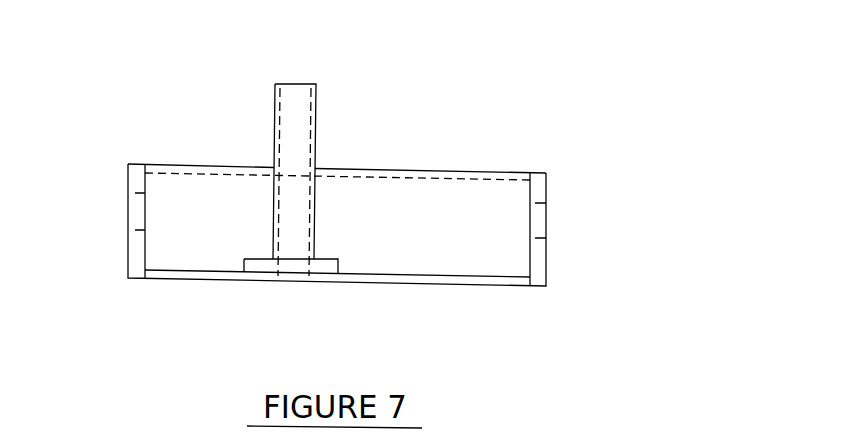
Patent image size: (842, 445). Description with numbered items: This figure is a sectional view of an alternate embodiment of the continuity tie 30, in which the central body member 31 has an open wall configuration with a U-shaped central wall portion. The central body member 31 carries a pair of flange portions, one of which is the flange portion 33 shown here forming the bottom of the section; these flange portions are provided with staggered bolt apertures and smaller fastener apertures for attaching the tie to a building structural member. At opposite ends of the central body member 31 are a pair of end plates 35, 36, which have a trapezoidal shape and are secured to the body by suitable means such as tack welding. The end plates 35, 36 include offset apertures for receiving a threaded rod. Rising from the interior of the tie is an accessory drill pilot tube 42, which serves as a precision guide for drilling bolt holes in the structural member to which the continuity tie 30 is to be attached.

The continuity tie 30 is at (202, 160).
The end plate 35 is at (137, 178).
The end plate 36 is at (540, 190).
The flange portion 33 is at (420, 285).
The central body member 31 is at (423, 209).
The drill pilot tube 42 is at (317, 120).